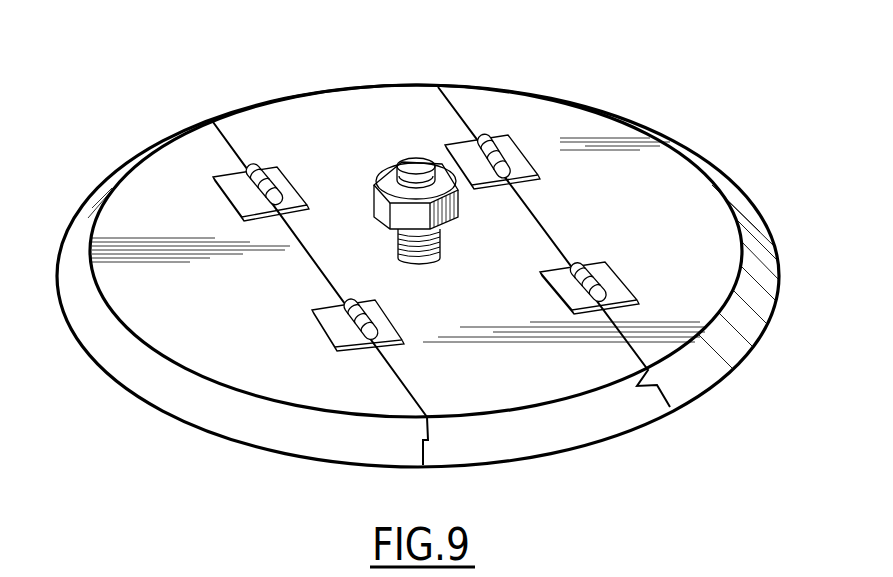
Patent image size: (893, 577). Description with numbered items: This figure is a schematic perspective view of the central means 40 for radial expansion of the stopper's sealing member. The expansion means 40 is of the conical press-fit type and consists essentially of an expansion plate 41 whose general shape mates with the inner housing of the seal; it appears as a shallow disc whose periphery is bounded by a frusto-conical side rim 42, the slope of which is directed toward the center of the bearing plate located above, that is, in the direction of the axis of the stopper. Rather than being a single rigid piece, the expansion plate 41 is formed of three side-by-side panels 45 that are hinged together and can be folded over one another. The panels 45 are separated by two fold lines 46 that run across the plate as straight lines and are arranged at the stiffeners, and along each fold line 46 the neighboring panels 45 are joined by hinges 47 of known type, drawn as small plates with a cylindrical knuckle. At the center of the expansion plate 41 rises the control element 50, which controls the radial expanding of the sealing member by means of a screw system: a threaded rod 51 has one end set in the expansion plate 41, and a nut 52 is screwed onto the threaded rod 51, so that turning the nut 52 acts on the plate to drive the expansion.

The central means for radial expansion 40 is at (587, 98).
The expansion plate 41 is at (345, 88).
The frusto-conical side rim 42 is at (225, 407).
The panels 45 is at (160, 193).
The fold lines 46 is at (252, 168).
The hinges 47 is at (497, 137).
The control element 50 is at (417, 167).
The threaded rod 51 is at (438, 238).
The nut 52 is at (383, 200).